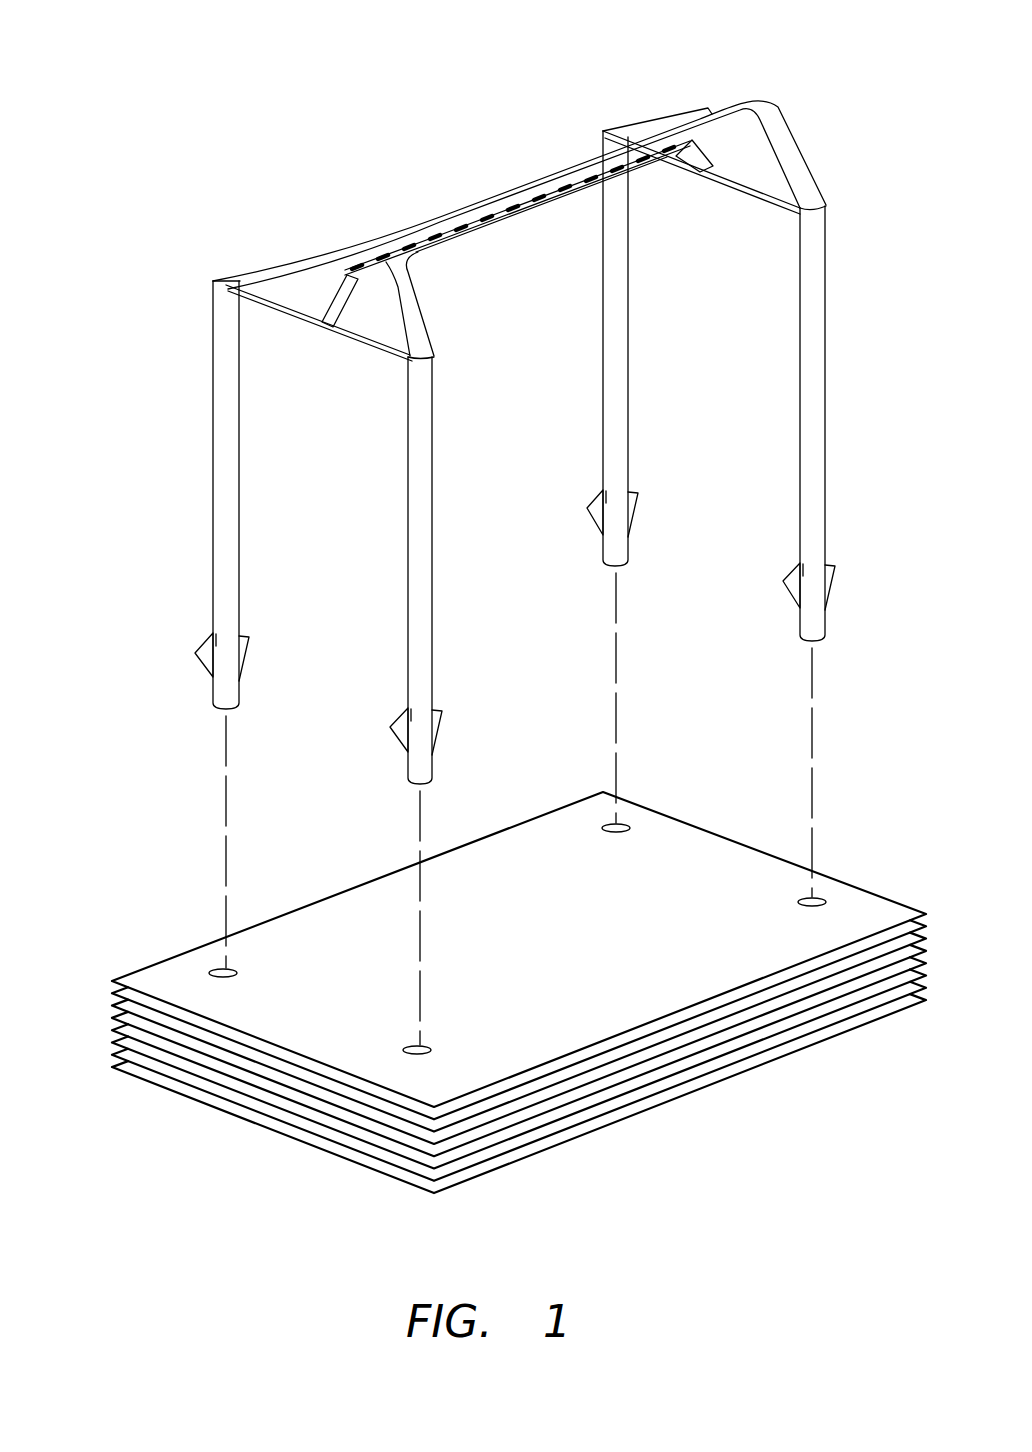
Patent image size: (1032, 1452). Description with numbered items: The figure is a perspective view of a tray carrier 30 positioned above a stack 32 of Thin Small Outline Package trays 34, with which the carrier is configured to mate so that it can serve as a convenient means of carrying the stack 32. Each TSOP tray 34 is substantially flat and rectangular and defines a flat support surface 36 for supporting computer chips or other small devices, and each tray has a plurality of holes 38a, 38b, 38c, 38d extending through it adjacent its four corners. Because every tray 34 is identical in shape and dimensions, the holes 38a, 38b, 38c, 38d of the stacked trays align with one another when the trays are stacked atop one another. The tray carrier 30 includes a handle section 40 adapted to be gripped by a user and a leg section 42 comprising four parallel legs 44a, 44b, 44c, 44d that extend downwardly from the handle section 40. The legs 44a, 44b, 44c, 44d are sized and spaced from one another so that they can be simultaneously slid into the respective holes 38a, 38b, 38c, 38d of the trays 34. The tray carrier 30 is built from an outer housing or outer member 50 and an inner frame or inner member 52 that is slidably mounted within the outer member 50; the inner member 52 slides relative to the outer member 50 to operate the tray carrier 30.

The tray carrier 30 is at (733, 36).
The stack 32 is at (682, 776).
The TSOP tray 34 is at (148, 978).
The flat support surface 36 is at (567, 944).
The hole 38a is at (222, 967).
The hole 38b is at (417, 1056).
The hole 38c is at (610, 823).
The hole 38d is at (818, 899).
The handle section 40 is at (350, 141).
The leg section 42 is at (165, 519).
The leg 44a is at (233, 393).
The leg 44b is at (424, 483).
The leg 44c is at (625, 212).
The leg 44d is at (812, 286).
The outer member 50 is at (548, 137).
The inner member 52 is at (310, 340).